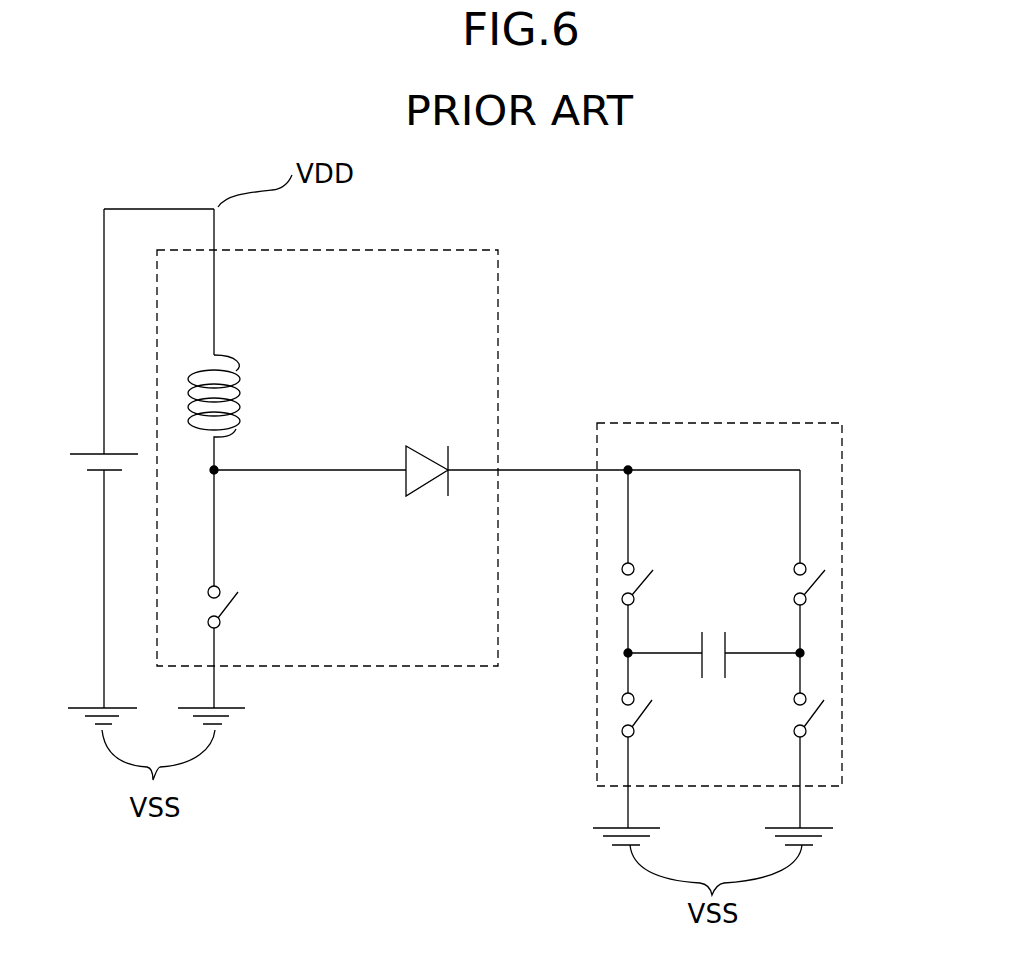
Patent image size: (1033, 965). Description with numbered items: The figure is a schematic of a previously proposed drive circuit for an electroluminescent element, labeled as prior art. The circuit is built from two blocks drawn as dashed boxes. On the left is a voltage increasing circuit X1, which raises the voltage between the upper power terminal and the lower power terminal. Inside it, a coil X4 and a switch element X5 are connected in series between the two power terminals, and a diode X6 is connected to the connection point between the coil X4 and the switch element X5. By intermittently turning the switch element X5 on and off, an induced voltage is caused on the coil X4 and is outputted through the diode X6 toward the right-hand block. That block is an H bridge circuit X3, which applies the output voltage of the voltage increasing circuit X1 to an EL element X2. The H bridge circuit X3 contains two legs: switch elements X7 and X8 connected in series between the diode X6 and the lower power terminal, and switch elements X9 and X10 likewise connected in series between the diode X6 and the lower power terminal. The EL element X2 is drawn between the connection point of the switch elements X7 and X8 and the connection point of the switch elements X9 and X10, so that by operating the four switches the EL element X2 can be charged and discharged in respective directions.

The voltage increasing circuit X1 is at (500, 330).
The EL element X2 is at (702, 668).
The H bridge circuit X3 is at (745, 423).
The coil X4 is at (240, 400).
The switch element X5 is at (230, 610).
The diode X6 is at (406, 496).
The switch element X7 is at (620, 605).
The switch element X8 is at (620, 735).
The switch element X9 is at (798, 570).
The switch element X10 is at (808, 735).